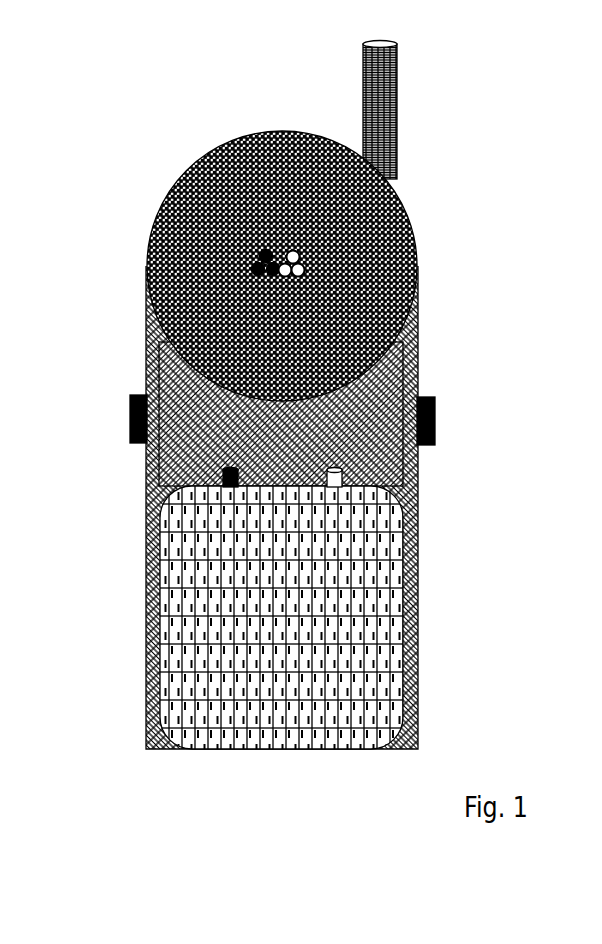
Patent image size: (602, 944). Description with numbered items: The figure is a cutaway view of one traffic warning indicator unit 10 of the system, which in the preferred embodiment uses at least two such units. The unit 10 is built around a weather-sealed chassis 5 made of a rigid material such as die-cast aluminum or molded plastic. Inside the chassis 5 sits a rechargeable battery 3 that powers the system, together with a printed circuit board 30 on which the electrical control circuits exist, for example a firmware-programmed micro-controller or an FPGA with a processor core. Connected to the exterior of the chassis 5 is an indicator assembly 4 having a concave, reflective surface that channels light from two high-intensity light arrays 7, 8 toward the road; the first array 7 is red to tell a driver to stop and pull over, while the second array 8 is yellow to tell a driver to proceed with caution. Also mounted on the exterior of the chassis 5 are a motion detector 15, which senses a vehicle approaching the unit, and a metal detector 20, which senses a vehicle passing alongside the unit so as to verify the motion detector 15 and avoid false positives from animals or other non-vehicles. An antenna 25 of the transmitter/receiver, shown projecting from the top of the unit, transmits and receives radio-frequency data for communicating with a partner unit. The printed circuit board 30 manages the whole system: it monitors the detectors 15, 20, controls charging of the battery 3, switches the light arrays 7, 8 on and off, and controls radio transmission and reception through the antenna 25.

The rechargeable battery 3 is at (158, 582).
The indicator assembly 4 is at (184, 243).
The weather-sealed chassis 5 is at (418, 657).
The first light array 7 is at (250, 272).
The second light array 8 is at (305, 255).
The spherical chamber 10 is at (333, 190).
The motion detector 15 is at (435, 420).
The metal detector 20 is at (130, 418).
The antenna 25 is at (402, 103).
The printed circuit board 30 is at (403, 348).